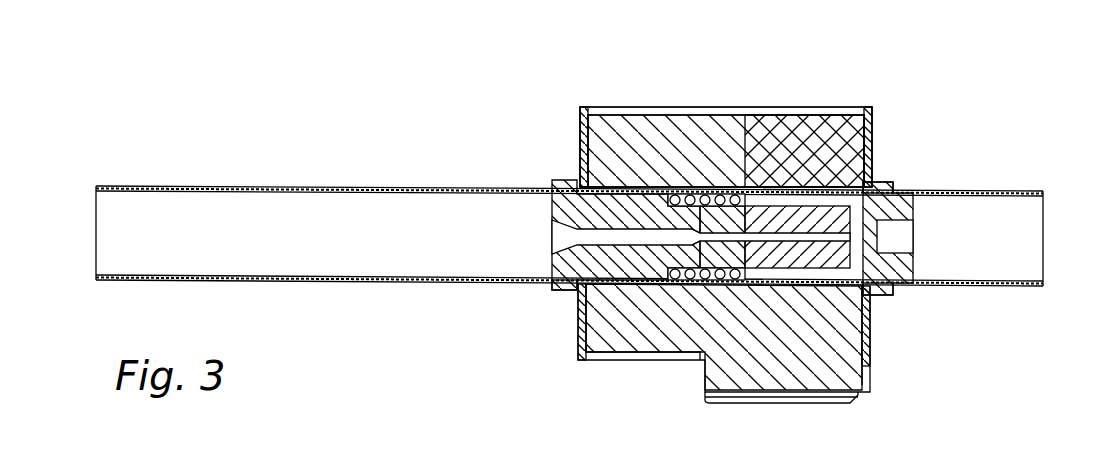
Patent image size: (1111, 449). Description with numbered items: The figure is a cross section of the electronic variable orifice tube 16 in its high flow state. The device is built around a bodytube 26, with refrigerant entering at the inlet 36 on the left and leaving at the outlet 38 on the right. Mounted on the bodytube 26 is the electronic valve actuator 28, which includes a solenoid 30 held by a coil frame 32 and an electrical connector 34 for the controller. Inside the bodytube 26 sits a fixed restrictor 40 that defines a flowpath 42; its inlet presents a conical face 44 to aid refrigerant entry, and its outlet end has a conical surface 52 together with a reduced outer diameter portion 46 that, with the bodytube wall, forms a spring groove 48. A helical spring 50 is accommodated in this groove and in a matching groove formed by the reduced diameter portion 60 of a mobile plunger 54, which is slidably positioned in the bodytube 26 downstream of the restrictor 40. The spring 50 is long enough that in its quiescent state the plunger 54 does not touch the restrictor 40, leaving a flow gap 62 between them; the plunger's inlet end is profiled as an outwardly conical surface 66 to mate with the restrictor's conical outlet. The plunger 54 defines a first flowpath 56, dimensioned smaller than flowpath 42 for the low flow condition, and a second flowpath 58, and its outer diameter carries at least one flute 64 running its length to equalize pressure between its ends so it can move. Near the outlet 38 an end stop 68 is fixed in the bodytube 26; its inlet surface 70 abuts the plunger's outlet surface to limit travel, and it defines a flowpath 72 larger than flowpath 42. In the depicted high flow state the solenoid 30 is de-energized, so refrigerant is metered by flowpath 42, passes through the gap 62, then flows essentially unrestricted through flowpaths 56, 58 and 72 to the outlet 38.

The electronic variable orifice tube 16 is at (958, 86).
The bodytube 26 is at (166, 185).
The electronic valve actuator 28 is at (750, 108).
The solenoid 30 is at (648, 130).
The coil frame 32 is at (580, 128).
The electrical connector 34 is at (843, 404).
The inlet 36 is at (80, 246).
The outlet 38 is at (1058, 218).
The restrictor 40 is at (640, 246).
The flowpath 42 is at (575, 185).
The conical face 44 is at (552, 228).
The reduced outer diameter portion 46 is at (684, 198).
The spring groove 48 is at (703, 280).
The helical spring 50 is at (704, 395).
The conical surface 52 is at (762, 222).
The mobile plunger 54 is at (847, 318).
The first flowpath 56 is at (868, 190).
The second flowpath 58 is at (870, 128).
The reduced diameter portion 60 is at (745, 275).
The flow gap 62 is at (640, 272).
The flute 64 is at (833, 235).
The outwardly conical surface 66 is at (560, 288).
The end stop 68 is at (910, 195).
The inlet surface 70 is at (868, 300).
The flowpath 72 is at (905, 239).